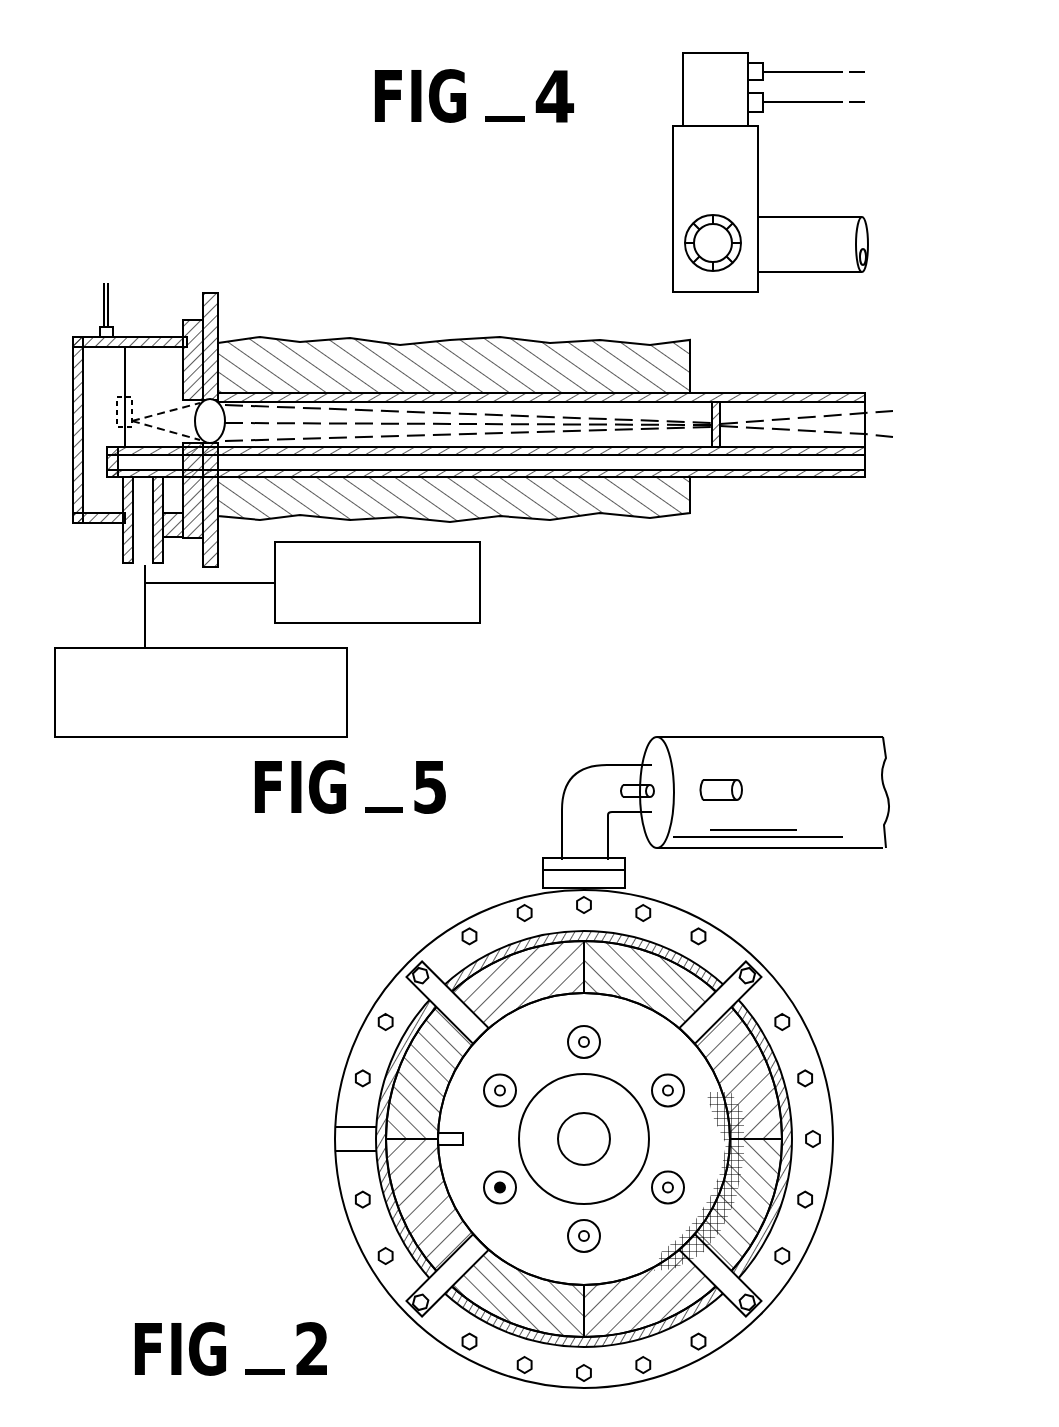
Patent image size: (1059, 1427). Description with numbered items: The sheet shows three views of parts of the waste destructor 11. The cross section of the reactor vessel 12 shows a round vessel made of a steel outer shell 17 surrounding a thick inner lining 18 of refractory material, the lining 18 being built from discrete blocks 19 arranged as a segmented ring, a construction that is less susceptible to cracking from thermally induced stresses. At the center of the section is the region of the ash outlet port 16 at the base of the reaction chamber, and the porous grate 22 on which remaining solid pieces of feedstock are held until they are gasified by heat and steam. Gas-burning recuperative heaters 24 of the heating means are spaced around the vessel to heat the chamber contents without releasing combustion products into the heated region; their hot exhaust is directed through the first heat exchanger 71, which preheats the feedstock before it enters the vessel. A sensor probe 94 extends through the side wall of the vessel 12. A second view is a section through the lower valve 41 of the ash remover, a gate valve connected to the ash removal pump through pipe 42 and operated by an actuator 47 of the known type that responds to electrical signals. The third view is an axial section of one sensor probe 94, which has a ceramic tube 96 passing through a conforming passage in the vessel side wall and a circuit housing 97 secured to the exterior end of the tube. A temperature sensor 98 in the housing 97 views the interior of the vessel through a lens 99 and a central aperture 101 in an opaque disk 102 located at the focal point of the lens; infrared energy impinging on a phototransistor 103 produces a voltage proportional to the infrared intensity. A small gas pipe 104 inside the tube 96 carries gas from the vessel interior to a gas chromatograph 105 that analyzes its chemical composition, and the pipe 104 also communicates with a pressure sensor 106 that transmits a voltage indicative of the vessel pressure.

In FIG. 2, the waste destructor 11 is at (505, 1139).
In FIG. 5, the reactor vessel 12 is at (336, 306).
In FIG. 2, the reactor vessel 12 is at (828, 1054).
In FIG. 2, the ash outlet port 16 is at (556, 1139).
In FIG. 2, the steel outer shell 17 is at (529, 1139).
In FIG. 2, the inner lining 18 is at (584, 1139).
In FIG. 2, the blocks 19 is at (584, 1139).
In FIG. 2, the grate 22 is at (699, 1181).
In FIG. 2, the heaters 24 is at (584, 1137).
In FIG. 4, the lower valve 41 is at (673, 178).
In FIG. 4, the pipe 42 is at (818, 217).
In FIG. 4, the actuators 47 is at (683, 88).
In FIG. 2, the first heat exchanger 71 is at (840, 812).
In FIG. 5, the sensor probes 94 is at (834, 495).
In FIG. 2, the sensor probes 94 is at (489, 1113).
In FIG. 5, the ceramic tube 96 is at (815, 393).
In FIG. 5, the circuit housing 97 is at (147, 337).
In FIG. 5, the temperature sensor 98 is at (105, 383).
In FIG. 5, the lens 99 is at (228, 400).
In FIG. 5, the central aperture 101 is at (732, 417).
In FIG. 5, the opaque disk 102 is at (725, 440).
In FIG. 5, the phototransistor 103 is at (124, 403).
In FIG. 5, the gas pipe 104 is at (575, 463).
In FIG. 5, the gas chromatograph 105 is at (187, 740).
In FIG. 5, the pressure sensor 106 is at (405, 623).